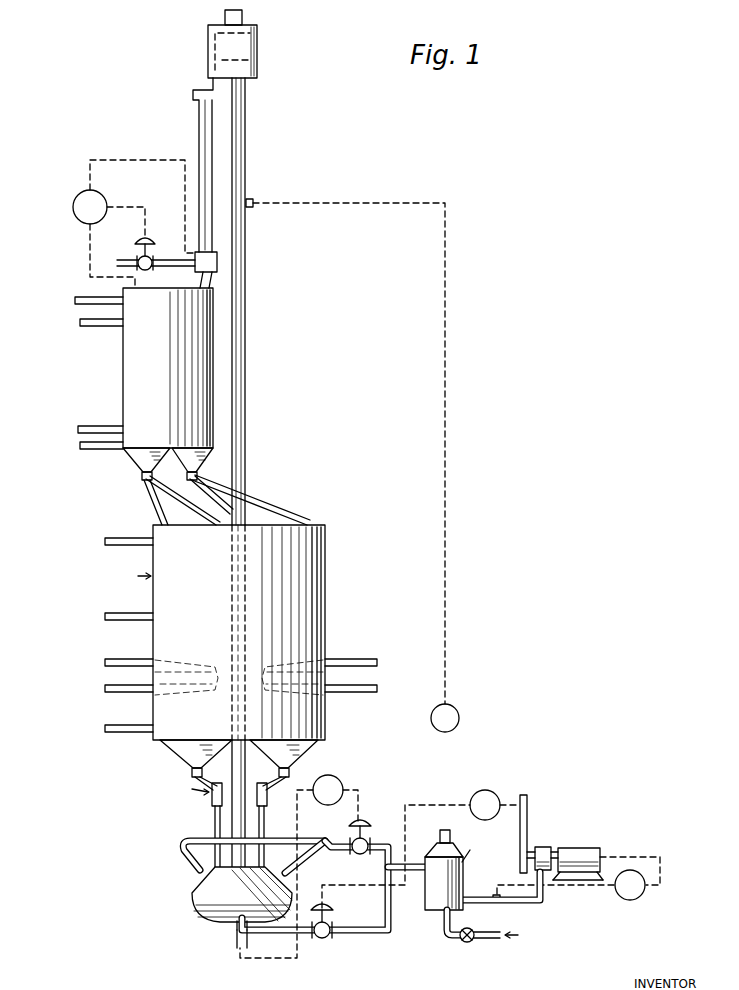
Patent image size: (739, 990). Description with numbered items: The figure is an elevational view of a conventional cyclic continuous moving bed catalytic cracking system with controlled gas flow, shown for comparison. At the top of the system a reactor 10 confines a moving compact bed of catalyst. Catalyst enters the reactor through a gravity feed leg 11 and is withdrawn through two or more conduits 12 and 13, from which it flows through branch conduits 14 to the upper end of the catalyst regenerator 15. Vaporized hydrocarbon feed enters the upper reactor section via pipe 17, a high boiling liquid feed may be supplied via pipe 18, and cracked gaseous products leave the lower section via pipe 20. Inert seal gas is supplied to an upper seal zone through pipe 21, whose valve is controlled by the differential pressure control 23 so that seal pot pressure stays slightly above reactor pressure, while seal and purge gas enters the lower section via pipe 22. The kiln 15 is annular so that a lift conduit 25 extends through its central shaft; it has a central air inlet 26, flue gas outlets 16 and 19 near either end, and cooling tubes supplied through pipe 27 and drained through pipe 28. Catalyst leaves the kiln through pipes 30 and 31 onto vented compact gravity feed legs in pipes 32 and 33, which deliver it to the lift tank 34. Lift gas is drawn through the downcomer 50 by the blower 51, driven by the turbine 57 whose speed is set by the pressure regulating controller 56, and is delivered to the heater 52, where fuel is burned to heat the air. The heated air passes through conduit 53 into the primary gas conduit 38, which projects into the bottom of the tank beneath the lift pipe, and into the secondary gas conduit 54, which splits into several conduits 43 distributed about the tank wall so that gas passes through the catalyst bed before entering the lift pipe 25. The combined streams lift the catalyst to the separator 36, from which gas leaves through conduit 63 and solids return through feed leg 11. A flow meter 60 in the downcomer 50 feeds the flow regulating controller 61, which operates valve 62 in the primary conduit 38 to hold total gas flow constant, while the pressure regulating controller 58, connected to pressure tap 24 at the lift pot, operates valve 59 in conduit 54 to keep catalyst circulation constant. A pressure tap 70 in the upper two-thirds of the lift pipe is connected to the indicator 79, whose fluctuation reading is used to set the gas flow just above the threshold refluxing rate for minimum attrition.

The reactor 10 is at (123, 384).
The gravity feed leg 11 is at (199, 120).
The conduit 12 is at (142, 477).
The conduit 13 is at (202, 480).
The branch conduits 14 is at (165, 497).
The catalyst regenerator 15 is at (326, 614).
The flue gas outlet 16 is at (110, 538).
The pipe 17 is at (80, 297).
The pipe 18 is at (82, 326).
The flue gas outlet 19 is at (115, 733).
The pipe 20 is at (88, 428).
The pipe 21 is at (166, 266).
The pipe 22 is at (82, 449).
The differential pressure control 23 is at (78, 197).
The pressure tap 24 is at (236, 950).
The lift conduit 25 is at (246, 333).
The central air inlet 26 is at (126, 606).
The pipe 27 is at (128, 653).
The pipe 28 is at (115, 693).
The pipe 30 is at (205, 781).
The pipe 31 is at (277, 781).
The pipe 32 is at (215, 812).
The pipe 33 is at (264, 812).
The lift tank 34 is at (195, 905).
The separator 36 is at (208, 57).
The primary gas conduit 38 is at (237, 925).
The conduits 43 is at (188, 872).
The downcomer 50 is at (528, 812).
The blower 51 is at (545, 848).
The heater 52 is at (432, 915).
The conduit 53 is at (418, 872).
The secondary gas conduit 54 is at (379, 845).
The pressure regulating controller 56 is at (625, 900).
The turbine 57 is at (590, 848).
The pressure regulating controller 58 is at (338, 779).
The valve 59 is at (365, 822).
The flow meter 60 is at (508, 802).
The flow regulating controller 61 is at (489, 790).
The valve 62 is at (320, 942).
The conduit 63 is at (225, 15).
The pressure tap 70 is at (254, 203).
The indicator 79 is at (460, 718).